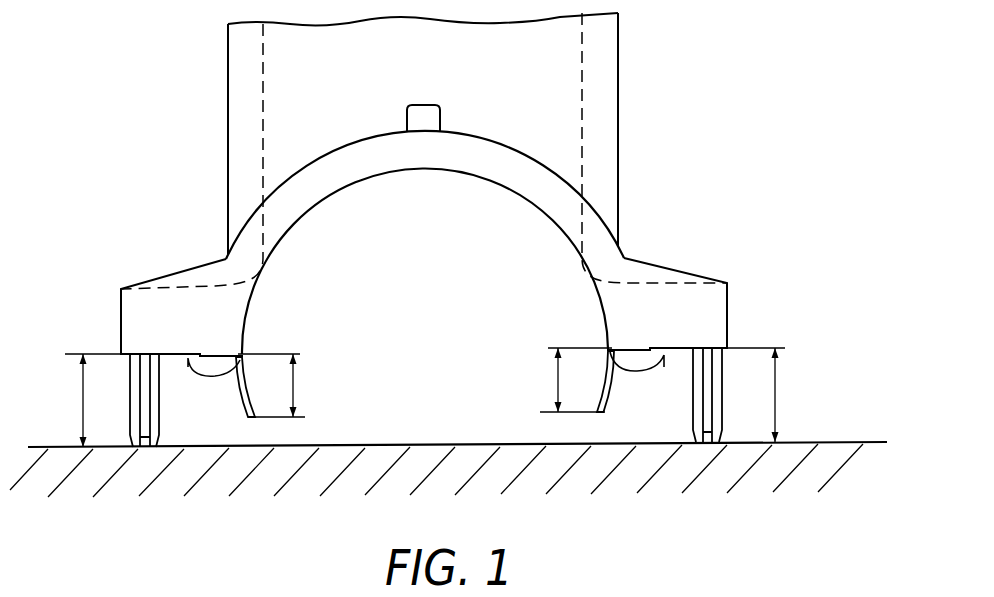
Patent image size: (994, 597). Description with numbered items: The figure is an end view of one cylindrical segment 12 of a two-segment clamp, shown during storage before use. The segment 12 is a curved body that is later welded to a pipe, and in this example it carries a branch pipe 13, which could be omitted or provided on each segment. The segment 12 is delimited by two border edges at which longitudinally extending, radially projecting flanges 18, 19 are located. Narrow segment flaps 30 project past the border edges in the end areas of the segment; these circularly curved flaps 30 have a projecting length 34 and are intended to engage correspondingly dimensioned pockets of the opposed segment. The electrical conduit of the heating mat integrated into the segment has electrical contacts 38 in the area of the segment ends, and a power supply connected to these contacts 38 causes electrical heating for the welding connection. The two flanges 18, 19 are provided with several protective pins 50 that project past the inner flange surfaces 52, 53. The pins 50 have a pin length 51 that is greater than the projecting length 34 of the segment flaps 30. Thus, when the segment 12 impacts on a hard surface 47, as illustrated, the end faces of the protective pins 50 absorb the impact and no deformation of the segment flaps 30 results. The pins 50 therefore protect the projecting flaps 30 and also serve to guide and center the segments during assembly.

The cylindrical segment 12 is at (659, 162).
The branch pipe 13 is at (605, 78).
The flange 18 is at (707, 319).
The flange 19 is at (152, 322).
The segment flap 30 is at (239, 388).
The projecting length 34 is at (295, 382).
The electrical contacts 38 is at (427, 117).
The hard surface 47 is at (857, 441).
The protective pins 50 is at (133, 405).
The pin length 51 is at (81, 395).
The inner flange surface 52 is at (612, 360).
The inner flange surface 53 is at (248, 355).